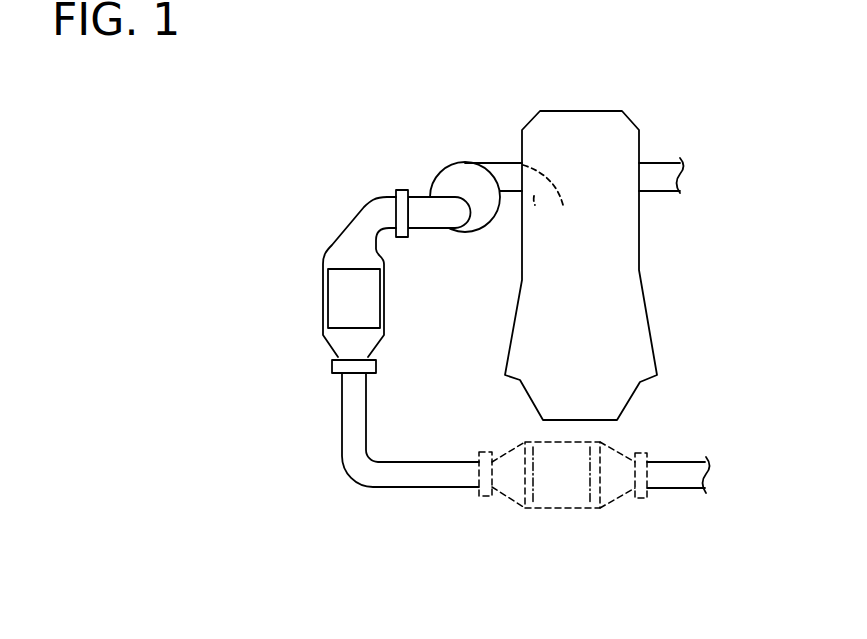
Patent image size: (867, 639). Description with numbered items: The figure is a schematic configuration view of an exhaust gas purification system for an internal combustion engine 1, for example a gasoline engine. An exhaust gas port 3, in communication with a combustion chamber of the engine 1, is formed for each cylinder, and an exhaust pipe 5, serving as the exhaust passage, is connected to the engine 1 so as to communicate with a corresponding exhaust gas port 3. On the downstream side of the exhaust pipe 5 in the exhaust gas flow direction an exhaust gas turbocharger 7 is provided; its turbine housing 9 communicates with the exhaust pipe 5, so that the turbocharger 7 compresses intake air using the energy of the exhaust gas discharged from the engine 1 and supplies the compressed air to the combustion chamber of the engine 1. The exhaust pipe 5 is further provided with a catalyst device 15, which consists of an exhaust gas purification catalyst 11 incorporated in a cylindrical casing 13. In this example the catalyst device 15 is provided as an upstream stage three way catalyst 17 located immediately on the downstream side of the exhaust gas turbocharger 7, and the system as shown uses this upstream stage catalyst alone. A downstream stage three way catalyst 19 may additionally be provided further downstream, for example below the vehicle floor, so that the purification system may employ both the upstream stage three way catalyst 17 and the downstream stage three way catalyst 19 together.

The internal combustion engine 1 is at (610, 98).
The exhaust gas port 3 is at (552, 170).
The exhaust pipe 5 is at (497, 162).
The exhaust gas turbocharger 7 is at (437, 205).
The turbine housing 9 is at (482, 216).
The exhaust gas purification catalyst 11 is at (340, 292).
The cylindrical casing 13 is at (330, 350).
The catalyst device 15 is at (378, 300).
The upstream stage three way catalyst 17 is at (359, 277).
The downstream stage three way catalyst 19 is at (512, 521).